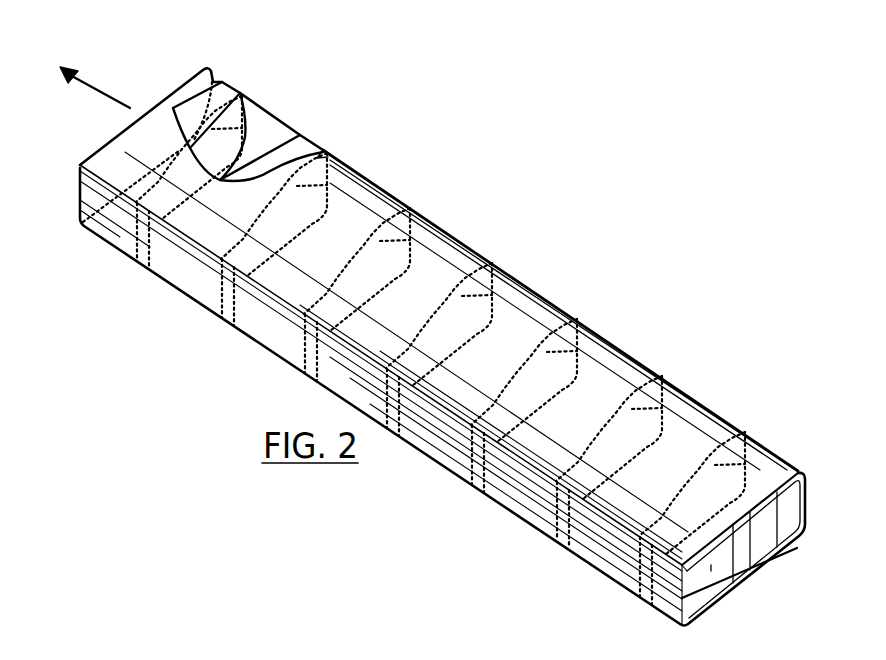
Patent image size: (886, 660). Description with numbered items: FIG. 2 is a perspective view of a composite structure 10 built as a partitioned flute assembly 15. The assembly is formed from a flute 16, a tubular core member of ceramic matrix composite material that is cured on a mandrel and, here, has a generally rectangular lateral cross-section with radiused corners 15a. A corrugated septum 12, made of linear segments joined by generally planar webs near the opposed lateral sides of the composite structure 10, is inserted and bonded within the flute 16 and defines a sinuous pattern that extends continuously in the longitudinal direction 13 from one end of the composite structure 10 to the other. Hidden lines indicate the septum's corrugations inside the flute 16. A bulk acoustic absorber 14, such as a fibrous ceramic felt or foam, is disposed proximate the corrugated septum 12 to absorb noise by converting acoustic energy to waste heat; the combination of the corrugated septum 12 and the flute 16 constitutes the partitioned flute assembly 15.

The composite structure 10 is at (587, 251).
The corrugated septum 12 is at (440, 222).
The longitudinal direction 13 is at (100, 88).
The bulk acoustic absorber 14 is at (272, 138).
The partitioned flute assembly 15 is at (816, 472).
The radiused corners 15a is at (82, 166).
The flute 16 is at (255, 107).